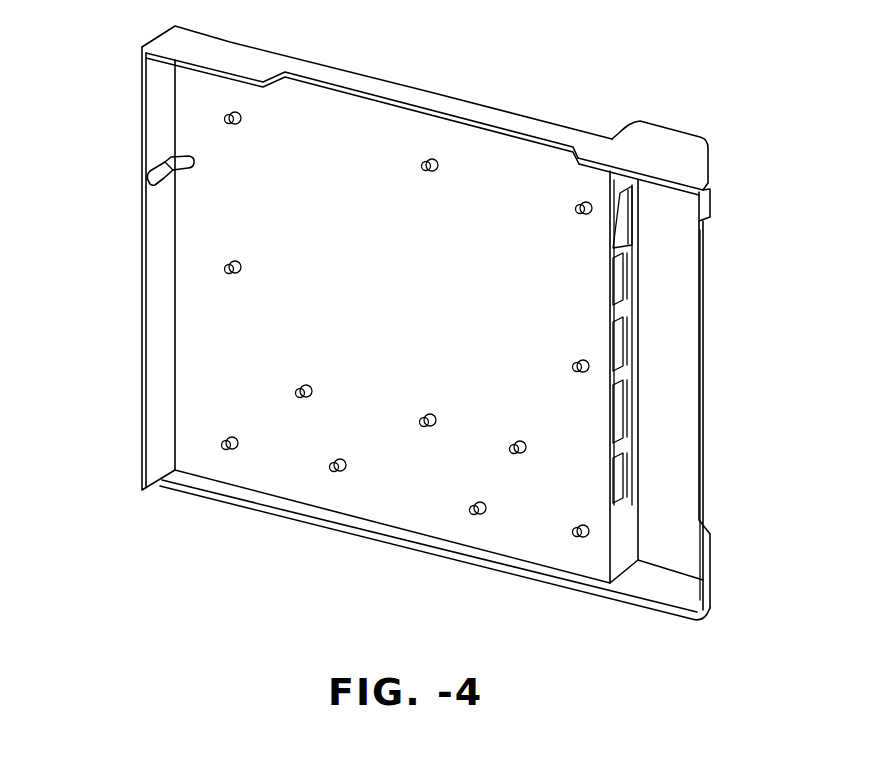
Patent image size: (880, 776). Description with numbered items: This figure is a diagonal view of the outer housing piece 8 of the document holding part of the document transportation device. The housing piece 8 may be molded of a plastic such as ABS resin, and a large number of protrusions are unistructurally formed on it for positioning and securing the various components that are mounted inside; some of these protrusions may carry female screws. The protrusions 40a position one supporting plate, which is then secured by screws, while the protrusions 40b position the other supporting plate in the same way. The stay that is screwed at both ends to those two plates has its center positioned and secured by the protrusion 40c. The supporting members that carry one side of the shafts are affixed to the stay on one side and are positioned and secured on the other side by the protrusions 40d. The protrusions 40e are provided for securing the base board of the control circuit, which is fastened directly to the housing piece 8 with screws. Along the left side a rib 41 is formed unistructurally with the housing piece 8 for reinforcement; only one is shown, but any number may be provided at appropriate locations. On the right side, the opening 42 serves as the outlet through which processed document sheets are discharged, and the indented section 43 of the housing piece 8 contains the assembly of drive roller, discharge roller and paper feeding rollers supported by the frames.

The outer housing piece 8 is at (662, 140).
The protrusions 40a is at (586, 200).
The protrusions 40b is at (226, 120).
The protrusion 40c is at (435, 158).
The protrusions 40d is at (300, 396).
The protrusions 40e is at (336, 474).
The rib 41 is at (167, 168).
The opening 42 is at (620, 246).
The indented section 43 is at (683, 356).